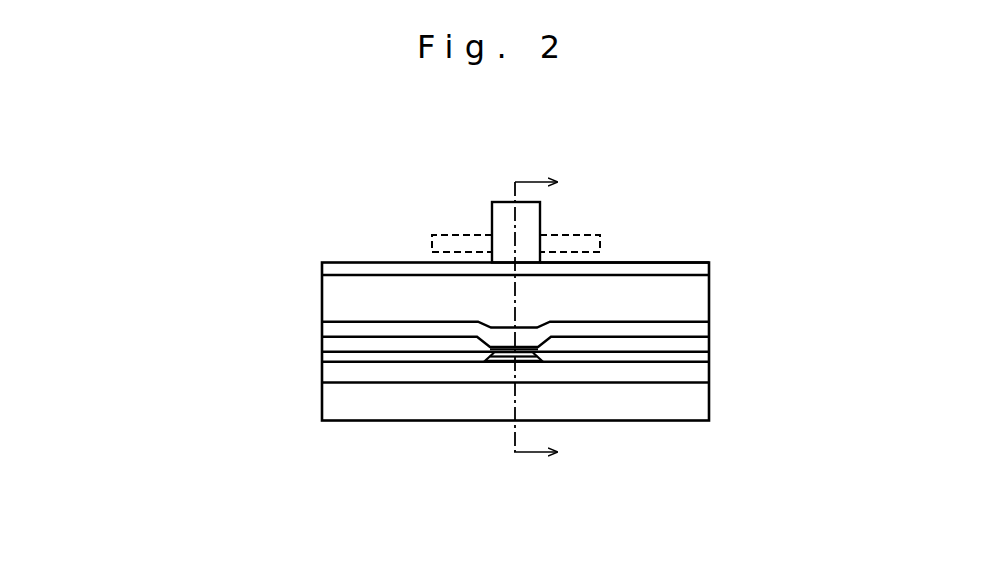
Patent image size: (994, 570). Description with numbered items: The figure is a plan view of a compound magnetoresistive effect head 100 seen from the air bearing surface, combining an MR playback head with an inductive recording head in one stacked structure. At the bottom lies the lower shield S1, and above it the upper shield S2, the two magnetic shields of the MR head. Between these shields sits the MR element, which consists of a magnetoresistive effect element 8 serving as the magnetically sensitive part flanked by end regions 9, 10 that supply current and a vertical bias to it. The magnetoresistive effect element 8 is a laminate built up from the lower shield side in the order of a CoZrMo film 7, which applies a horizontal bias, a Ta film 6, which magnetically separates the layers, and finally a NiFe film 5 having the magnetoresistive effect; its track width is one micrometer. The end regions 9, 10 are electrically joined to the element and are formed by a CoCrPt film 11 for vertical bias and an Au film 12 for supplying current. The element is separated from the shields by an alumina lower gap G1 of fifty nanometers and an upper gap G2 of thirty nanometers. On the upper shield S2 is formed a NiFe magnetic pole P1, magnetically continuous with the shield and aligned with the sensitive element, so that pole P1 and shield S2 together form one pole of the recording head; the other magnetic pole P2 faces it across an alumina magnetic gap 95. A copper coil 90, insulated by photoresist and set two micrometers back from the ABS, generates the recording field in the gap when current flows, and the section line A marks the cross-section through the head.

The compound magnetoresistive effect head 100 is at (312, 125).
The coil 90 is at (448, 232).
The magnetic gap 95 is at (652, 263).
The end region 9 is at (124, 357).
The end region 10 is at (125, 377).
The Au film 12 is at (322, 345).
The CoCrPt film 11 is at (322, 357).
The magnetoresistive effect element 8 is at (293, 449).
The NiFe film 5 is at (492, 354).
The Ta film 6 is at (500, 356).
The CoZrMo film 7 is at (527, 359).
The magnetic pole P1 is at (710, 294).
The magnetic pole P2 is at (491, 222).
The lower shield S1 is at (710, 408).
The upper shield S2 is at (710, 315).
The lower gap G1 is at (710, 377).
The upper gap G2 is at (710, 331).
The section line A-A' A is at (553, 317).